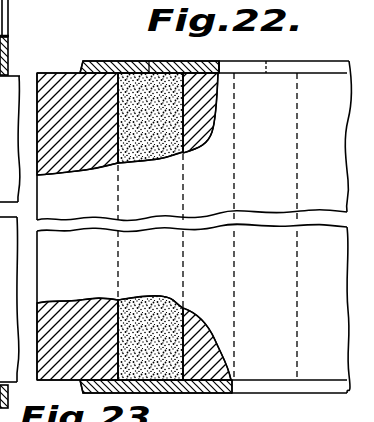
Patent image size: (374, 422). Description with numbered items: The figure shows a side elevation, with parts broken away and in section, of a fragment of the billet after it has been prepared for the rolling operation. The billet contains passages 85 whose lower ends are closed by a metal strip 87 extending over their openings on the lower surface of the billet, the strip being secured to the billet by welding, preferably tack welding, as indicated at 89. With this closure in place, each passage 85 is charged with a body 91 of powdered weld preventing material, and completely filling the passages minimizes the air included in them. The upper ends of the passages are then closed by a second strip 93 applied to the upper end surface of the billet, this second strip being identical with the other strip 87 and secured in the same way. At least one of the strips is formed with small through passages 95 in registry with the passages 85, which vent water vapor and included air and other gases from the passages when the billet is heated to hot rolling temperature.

The passages 85 is at (122, 189).
The metal strip 87 is at (212, 393).
The tack welding 89 is at (80, 384).
The body of powdered weld preventing material 91 is at (165, 330).
The second strip 93 is at (321, 65).
The through passages 95 is at (148, 72).